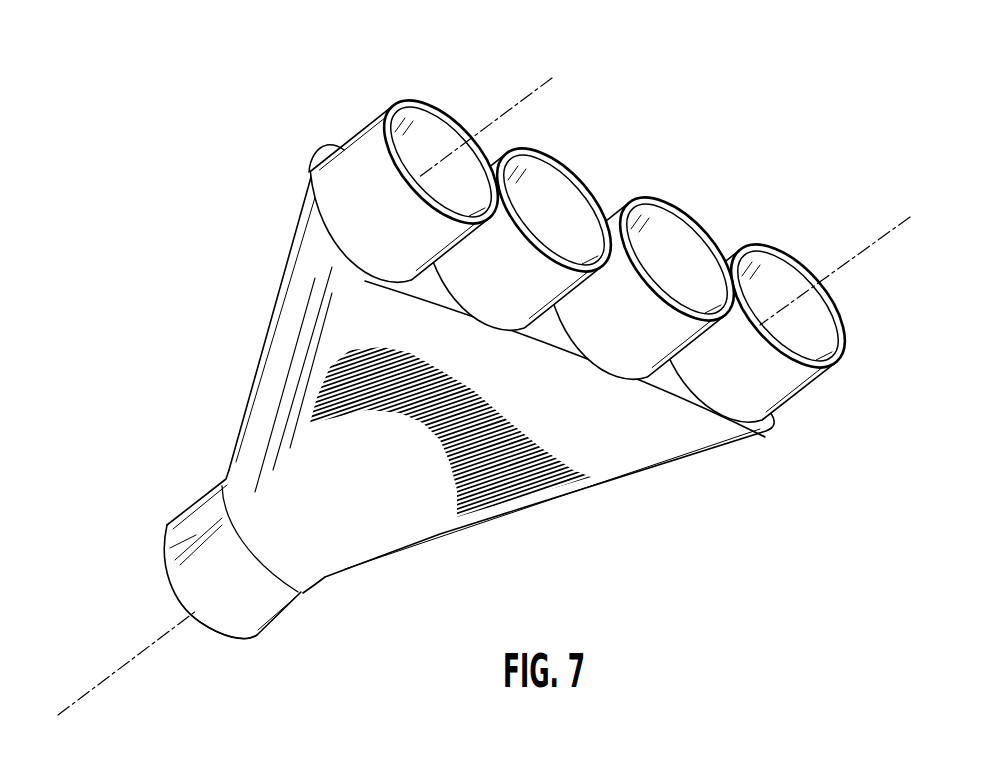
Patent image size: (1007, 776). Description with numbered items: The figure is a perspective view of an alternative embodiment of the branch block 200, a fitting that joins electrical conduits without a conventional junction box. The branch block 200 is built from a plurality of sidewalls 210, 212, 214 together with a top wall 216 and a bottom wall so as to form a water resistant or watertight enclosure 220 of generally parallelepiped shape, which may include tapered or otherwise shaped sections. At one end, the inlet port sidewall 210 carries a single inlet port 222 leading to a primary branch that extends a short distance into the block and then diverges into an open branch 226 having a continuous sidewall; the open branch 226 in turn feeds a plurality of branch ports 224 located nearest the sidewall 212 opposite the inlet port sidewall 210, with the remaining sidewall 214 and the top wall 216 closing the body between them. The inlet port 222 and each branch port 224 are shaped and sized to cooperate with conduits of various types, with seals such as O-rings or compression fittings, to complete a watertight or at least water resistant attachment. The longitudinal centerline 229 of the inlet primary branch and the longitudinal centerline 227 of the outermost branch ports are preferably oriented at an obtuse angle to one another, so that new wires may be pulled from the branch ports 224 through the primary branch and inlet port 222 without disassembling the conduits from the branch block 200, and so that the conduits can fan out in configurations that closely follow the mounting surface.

The branch block 200 is at (215, 110).
The inlet port sidewall 210 is at (188, 533).
The sidewall 212 is at (340, 143).
The sidewall 214 is at (267, 383).
The top wall 216 is at (383, 503).
The watertight enclosure 220 is at (433, 467).
The inlet port 222 is at (223, 633).
The branch ports 224 is at (430, 135).
The open branch 226 is at (342, 327).
The longitudinal centerline of the outermost branch ports 227 is at (548, 80).
The longitudinal centerline of the inlet primary branch 229 is at (88, 692).